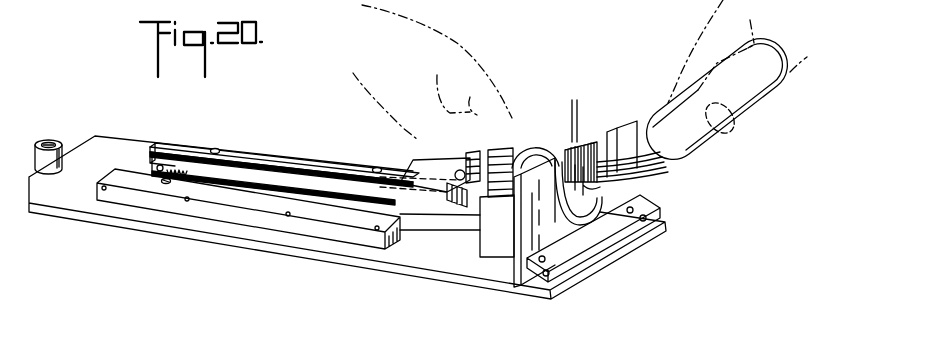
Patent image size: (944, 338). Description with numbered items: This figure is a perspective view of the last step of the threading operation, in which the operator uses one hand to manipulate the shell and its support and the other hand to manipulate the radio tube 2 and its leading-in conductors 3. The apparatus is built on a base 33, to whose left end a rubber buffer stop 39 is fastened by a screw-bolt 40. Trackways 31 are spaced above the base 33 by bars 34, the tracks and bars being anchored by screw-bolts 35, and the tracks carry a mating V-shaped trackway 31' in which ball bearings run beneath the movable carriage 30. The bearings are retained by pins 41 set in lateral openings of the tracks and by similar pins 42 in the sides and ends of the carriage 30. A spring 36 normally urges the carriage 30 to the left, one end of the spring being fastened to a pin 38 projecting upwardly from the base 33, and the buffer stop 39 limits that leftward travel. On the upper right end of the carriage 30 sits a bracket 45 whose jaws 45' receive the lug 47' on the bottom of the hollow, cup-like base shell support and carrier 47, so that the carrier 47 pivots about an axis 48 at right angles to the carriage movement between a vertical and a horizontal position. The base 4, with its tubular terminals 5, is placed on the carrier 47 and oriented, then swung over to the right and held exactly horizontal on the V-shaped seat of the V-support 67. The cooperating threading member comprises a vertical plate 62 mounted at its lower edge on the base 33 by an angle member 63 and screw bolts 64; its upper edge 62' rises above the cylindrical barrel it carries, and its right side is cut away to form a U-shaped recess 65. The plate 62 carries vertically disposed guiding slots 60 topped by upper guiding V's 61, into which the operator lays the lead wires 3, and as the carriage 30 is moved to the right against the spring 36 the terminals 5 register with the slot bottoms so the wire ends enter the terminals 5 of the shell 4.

The radio tube 2 is at (722, 143).
The leading-in conductors 3 is at (637, 180).
The base 4 is at (541, 160).
The tubular terminals 5 is at (524, 155).
The movable carriage 30 is at (270, 160).
The trackways 31 is at (316, 196).
The V-shaped trackway 31' is at (191, 143).
The base 33 is at (347, 264).
The bars 34 is at (322, 236).
The screw-bolts 35 is at (164, 184).
The spring 36 is at (188, 167).
The pin 38 is at (160, 165).
The buffer stop 39 is at (62, 148).
The screw-bolt 40 is at (49, 142).
The pins 41 is at (187, 201).
The pins 42 is at (102, 188).
The bracket 45 is at (415, 167).
The jaws 45' is at (438, 216).
The base shell support and carrier 47 is at (511, 150).
The lug 47' is at (487, 146).
The axis 48 is at (460, 170).
The guiding slots 60 is at (607, 130).
The upper guiding V's 61 is at (576, 117).
The vertical plate 62 is at (635, 133).
The upper edge 62' is at (591, 129).
The angle member 63 is at (592, 250).
The screw bolts 64 is at (542, 263).
The U-shaped recess 65 is at (583, 217).
The V-support 67 is at (493, 243).